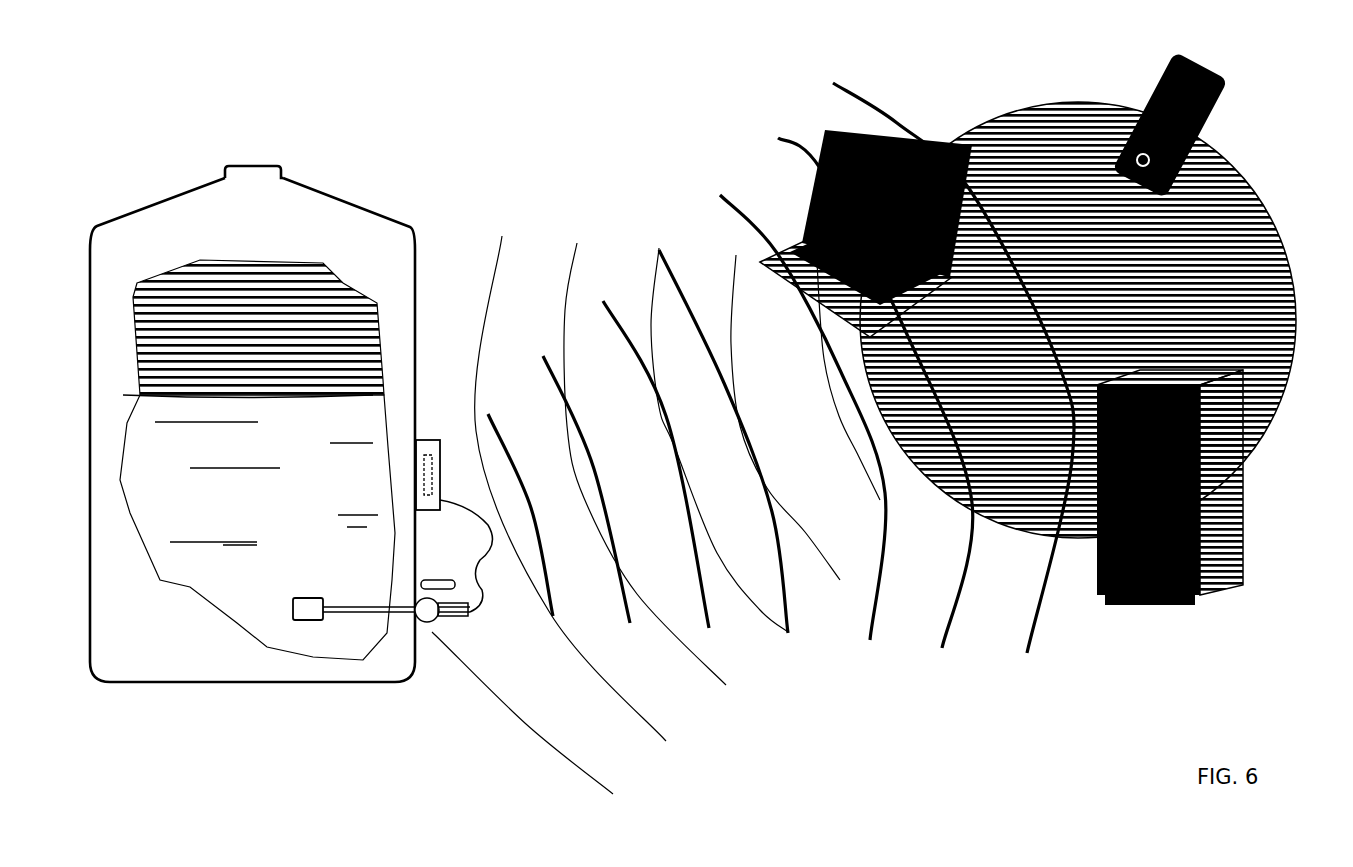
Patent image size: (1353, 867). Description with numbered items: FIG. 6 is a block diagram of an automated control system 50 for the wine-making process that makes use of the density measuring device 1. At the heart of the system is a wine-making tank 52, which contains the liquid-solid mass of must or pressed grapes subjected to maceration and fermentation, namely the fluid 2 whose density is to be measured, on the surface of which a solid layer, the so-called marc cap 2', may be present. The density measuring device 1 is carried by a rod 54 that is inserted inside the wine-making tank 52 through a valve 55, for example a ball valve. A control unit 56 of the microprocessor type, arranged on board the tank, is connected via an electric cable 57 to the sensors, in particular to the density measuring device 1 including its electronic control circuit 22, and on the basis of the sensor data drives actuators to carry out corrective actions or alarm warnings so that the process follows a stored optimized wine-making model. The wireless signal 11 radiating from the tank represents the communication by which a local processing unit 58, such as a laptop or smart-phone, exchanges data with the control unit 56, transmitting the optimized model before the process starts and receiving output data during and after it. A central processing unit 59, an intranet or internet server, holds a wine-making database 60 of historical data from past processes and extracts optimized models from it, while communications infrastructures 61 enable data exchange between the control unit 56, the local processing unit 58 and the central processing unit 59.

The density measuring device 1 is at (306, 597).
The fluid 2 is at (257, 527).
The marc cap 2' is at (247, 318).
The wireless signal 11 is at (814, 684).
The electronic control circuit 22 is at (428, 438).
The automated control system 50 is at (203, 152).
The wine-making tank 52 is at (300, 175).
The rod 54 is at (378, 606).
The valve 55 is at (434, 578).
The control unit 56 is at (443, 468).
The electric cable 57 is at (470, 612).
The local processing unit 58 is at (758, 250).
The central processing unit 59 is at (1247, 512).
The wine-making database 60 is at (1248, 458).
The communications infrastructures 61 is at (1283, 230).